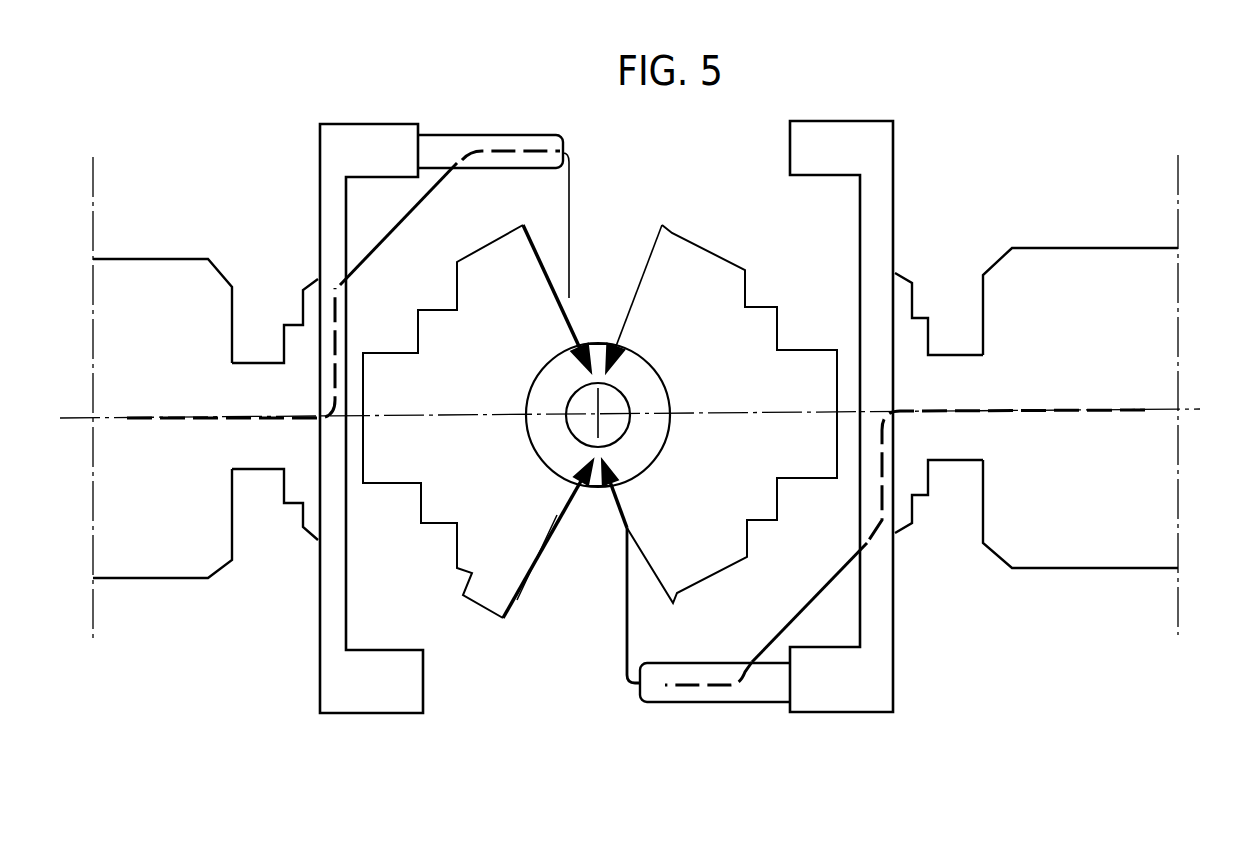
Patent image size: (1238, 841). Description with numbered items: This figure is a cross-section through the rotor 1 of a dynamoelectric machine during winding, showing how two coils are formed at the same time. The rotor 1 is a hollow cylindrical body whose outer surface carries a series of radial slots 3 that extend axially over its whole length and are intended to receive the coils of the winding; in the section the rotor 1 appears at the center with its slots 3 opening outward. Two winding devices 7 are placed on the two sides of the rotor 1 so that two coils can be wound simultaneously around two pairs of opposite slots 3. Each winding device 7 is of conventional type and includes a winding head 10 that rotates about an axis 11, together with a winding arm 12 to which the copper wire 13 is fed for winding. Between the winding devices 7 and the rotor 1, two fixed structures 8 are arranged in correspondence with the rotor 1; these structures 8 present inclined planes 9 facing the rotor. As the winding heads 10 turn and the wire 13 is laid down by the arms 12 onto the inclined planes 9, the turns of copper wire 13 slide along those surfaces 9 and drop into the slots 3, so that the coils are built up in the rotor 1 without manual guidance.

The rotor 1 is at (660, 433).
The radial slots 3 is at (613, 361).
The winding devices 7 is at (269, 196).
The fixed structures 8 is at (482, 268).
The inclined planes 9 is at (537, 240).
The winding head 10 is at (320, 606).
The axis 11 is at (175, 413).
The winding arm 12 is at (463, 142).
The copper wire 13 is at (405, 213).